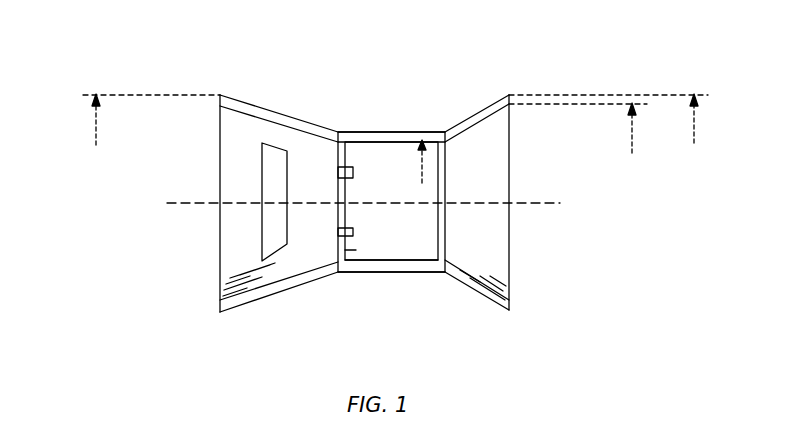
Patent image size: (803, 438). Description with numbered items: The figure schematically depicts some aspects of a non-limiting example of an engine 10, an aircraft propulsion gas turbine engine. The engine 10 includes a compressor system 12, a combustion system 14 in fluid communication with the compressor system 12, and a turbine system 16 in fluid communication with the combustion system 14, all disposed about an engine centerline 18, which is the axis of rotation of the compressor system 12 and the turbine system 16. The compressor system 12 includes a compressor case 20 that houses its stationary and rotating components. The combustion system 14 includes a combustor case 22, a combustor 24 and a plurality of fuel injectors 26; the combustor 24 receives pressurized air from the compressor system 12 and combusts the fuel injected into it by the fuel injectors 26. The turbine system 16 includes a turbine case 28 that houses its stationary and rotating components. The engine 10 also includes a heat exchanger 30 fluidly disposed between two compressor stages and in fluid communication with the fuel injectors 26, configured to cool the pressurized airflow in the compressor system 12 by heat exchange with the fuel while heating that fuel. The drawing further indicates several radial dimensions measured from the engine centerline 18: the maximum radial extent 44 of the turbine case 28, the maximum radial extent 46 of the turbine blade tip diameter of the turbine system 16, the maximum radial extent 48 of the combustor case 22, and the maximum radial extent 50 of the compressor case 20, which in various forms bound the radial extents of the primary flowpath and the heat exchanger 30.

The engine 10 is at (248, 50).
The compressor system 12 is at (279, 194).
The combustion system 14 is at (415, 198).
The turbine system 16 is at (476, 195).
The engine centerline 18 is at (543, 202).
The compressor case 20 is at (284, 115).
The combustor case 22 is at (393, 132).
The combustor 24 is at (415, 259).
The fuel injectors 26 is at (355, 232).
The turbine case 28 is at (467, 120).
The heat exchanger 30 is at (288, 244).
The maximum radial extent of turbine case 44 is at (695, 135).
The maximum radial extent of turbine blade tip diameter 46 is at (633, 145).
The maximum radial extent of combustor case 48 is at (422, 172).
The maximum radial extent of compressor case 50 is at (96, 130).